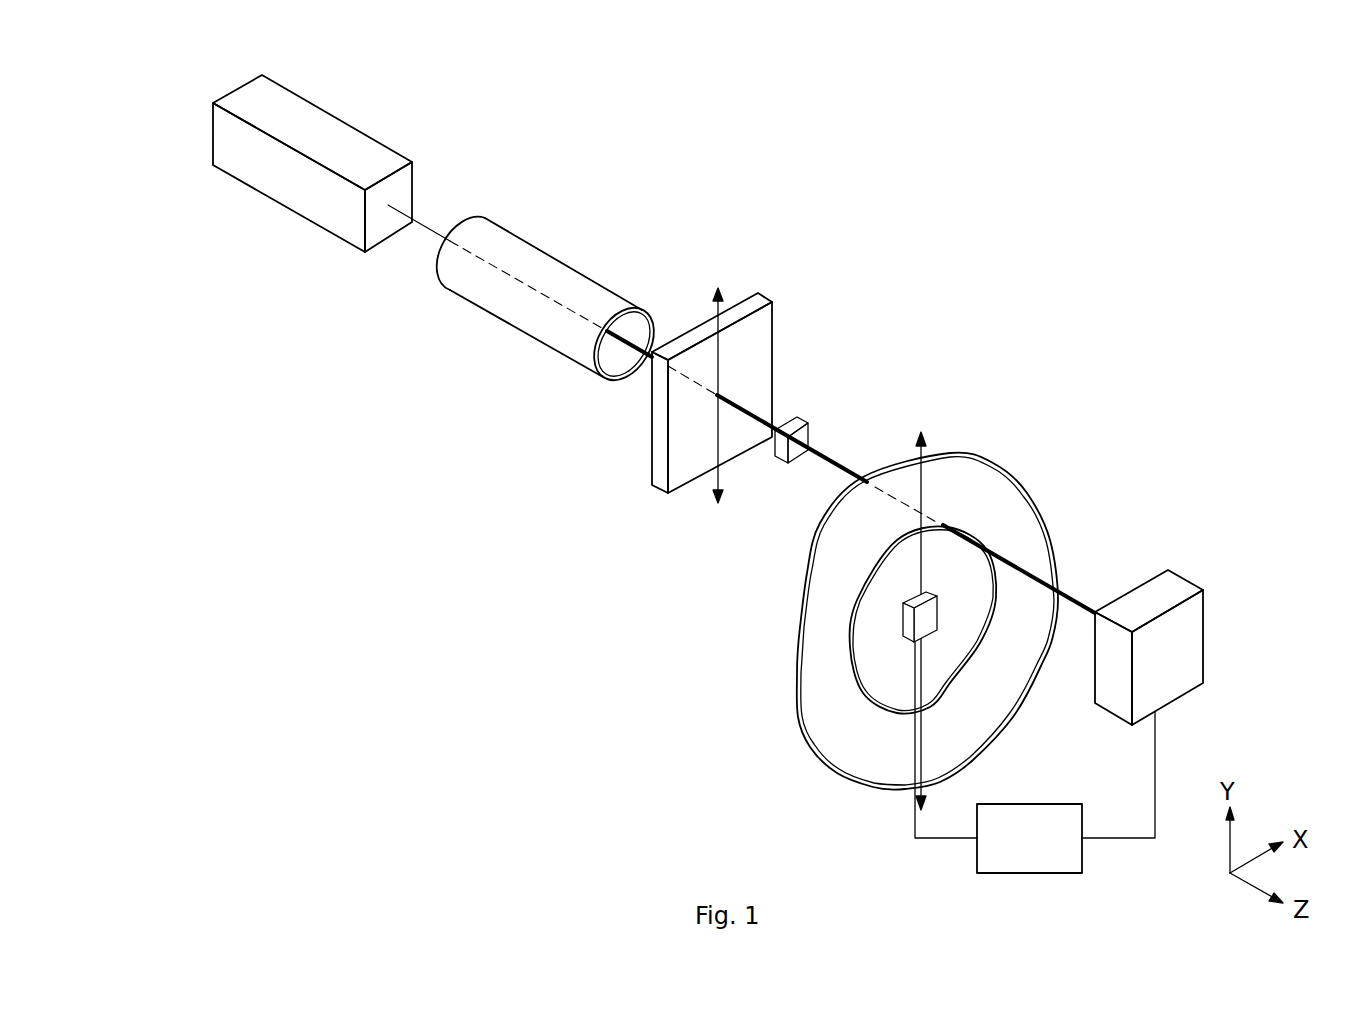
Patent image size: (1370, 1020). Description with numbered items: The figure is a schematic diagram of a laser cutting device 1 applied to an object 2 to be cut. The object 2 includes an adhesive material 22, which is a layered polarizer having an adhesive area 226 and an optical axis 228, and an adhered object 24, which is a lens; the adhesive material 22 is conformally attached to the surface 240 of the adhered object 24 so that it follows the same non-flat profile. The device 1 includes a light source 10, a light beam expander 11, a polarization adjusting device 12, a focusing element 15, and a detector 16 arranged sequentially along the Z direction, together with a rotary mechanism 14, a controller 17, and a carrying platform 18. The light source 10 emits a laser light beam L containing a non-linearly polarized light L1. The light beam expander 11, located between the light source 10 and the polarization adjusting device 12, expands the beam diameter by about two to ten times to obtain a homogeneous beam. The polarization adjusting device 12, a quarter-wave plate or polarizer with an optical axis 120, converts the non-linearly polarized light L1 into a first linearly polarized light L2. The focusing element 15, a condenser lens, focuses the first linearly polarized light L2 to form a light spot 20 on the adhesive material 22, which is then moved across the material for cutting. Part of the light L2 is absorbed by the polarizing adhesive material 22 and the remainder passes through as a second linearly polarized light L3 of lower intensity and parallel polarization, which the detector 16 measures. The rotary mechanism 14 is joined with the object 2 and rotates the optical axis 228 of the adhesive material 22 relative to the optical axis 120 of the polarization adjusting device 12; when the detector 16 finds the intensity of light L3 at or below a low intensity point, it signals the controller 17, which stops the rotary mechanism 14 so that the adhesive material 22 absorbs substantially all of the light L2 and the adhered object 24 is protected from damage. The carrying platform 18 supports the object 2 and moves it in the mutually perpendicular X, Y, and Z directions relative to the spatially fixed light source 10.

The laser cutting device 1 is at (141, 79).
The light source 10 is at (343, 133).
The light beam L is at (433, 232).
The non-linearly polarized light L1 is at (447, 232).
The light beam expander 11 is at (547, 268).
The polarization adjusting device 12 is at (757, 297).
The optical axis 120 is at (713, 324).
The first linearly polarized light L2 is at (743, 407).
The focusing element 15 is at (797, 415).
The object 2 is at (846, 603).
The adhesive material 22 is at (822, 745).
The adhesive area 226 is at (820, 650).
The optical axis 228 is at (922, 487).
The adhered object 24 is at (893, 688).
The surface 240 is at (850, 677).
The light spot 20 is at (943, 522).
The rotary mechanism 14 is at (937, 594).
The carrying platform 18 is at (937, 597).
The second linearly polarized light L3 is at (1072, 595).
The detector 16 is at (1168, 587).
The controller 17 is at (1055, 857).